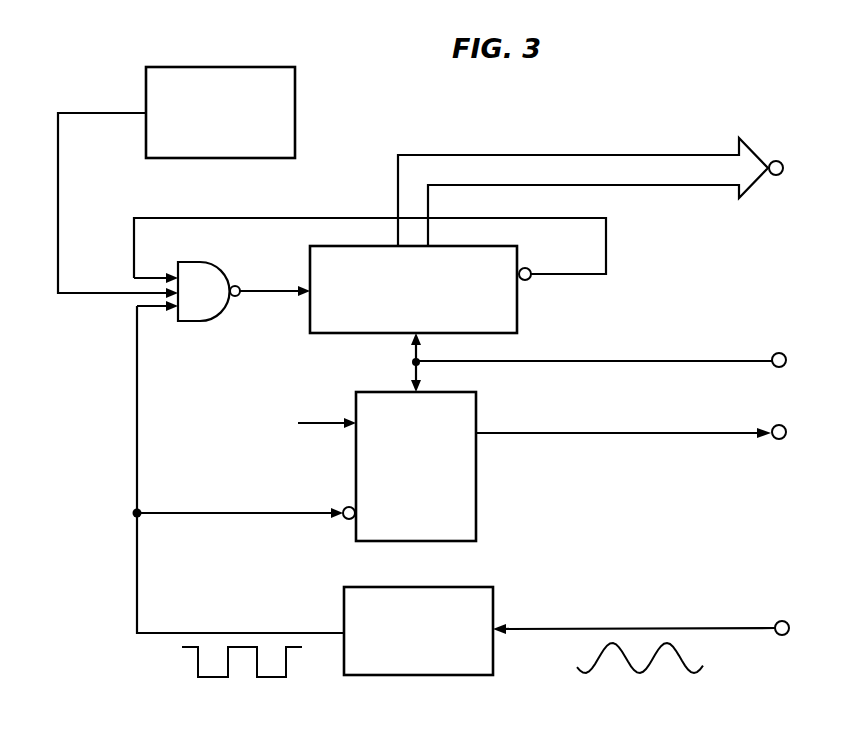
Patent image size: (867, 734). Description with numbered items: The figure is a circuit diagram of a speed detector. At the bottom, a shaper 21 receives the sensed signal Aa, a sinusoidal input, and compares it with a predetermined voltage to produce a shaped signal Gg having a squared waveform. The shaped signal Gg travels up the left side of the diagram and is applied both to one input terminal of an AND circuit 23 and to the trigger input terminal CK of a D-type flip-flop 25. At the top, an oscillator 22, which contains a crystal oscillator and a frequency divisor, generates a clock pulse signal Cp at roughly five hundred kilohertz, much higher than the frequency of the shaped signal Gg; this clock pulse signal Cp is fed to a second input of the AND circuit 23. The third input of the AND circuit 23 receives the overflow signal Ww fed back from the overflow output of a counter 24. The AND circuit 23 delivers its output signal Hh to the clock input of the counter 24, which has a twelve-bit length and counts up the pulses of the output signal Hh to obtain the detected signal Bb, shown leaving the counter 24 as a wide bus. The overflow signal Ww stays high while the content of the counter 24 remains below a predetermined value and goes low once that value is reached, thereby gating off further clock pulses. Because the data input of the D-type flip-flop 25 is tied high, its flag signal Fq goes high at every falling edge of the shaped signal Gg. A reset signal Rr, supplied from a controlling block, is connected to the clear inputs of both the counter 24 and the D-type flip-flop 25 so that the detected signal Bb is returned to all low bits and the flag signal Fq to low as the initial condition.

The shaper 21 is at (493, 606).
The oscillator 22 is at (248, 67).
The AND circuit 23 is at (217, 276).
The counter 24 is at (518, 306).
The D-type flip-flop 25 is at (476, 476).
The clock pulse signal Cp is at (60, 226).
The overflow signal Ww is at (343, 218).
The output signal Hh is at (272, 297).
The detected signal Bb is at (597, 155).
The reset signal Rr is at (670, 361).
The flag signal Fq is at (648, 433).
The shaped signal Gg is at (217, 633).
The sensed signal Aa is at (645, 629).